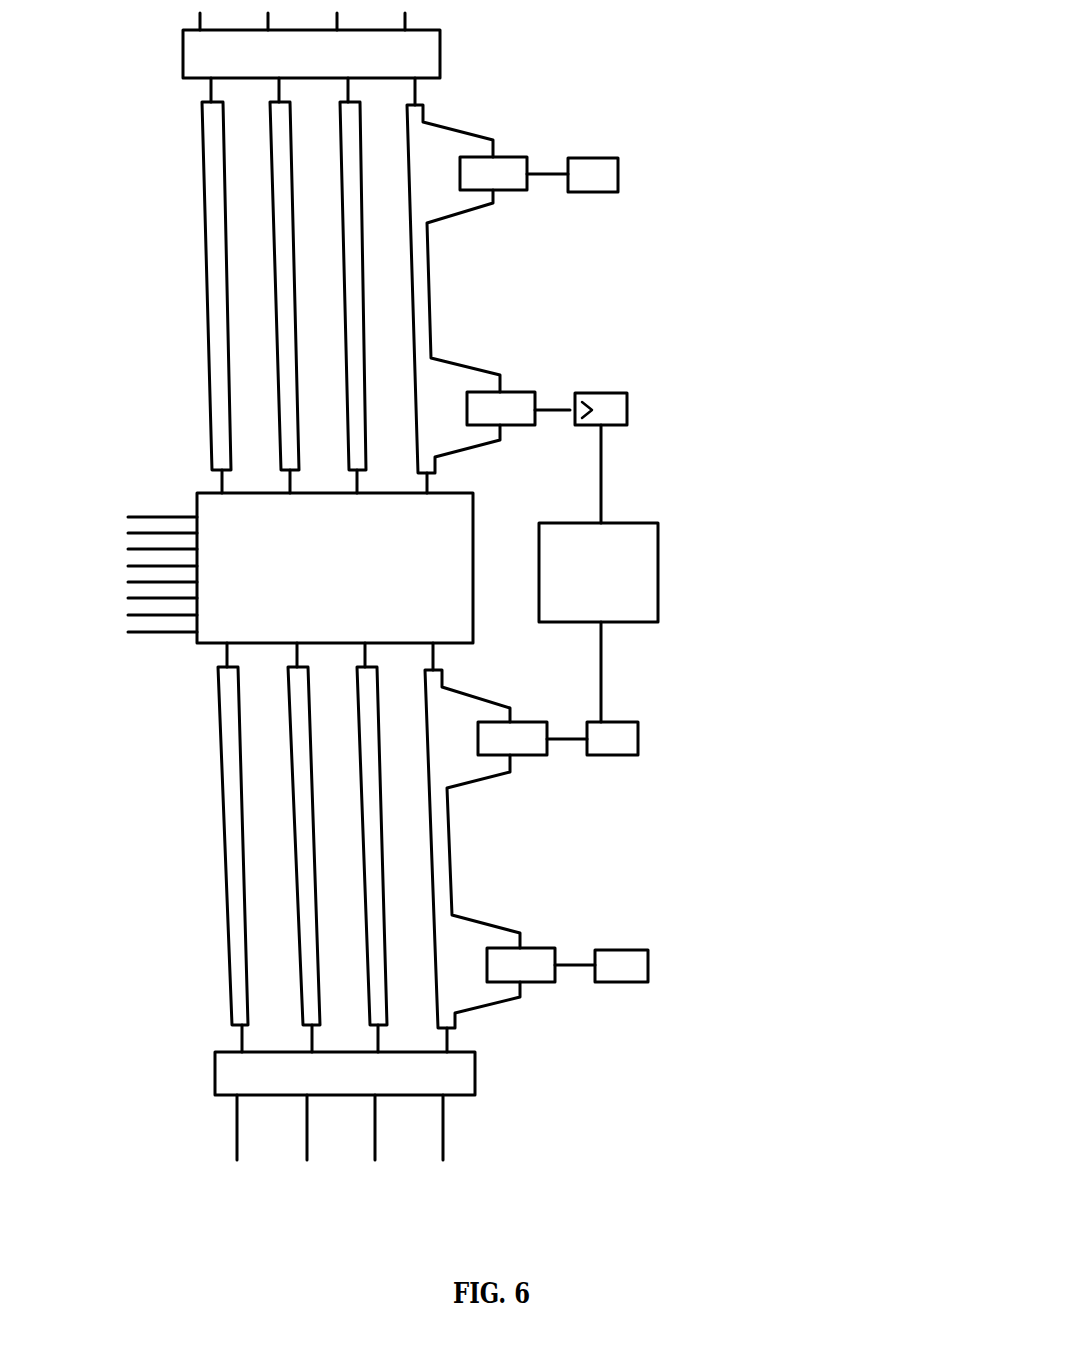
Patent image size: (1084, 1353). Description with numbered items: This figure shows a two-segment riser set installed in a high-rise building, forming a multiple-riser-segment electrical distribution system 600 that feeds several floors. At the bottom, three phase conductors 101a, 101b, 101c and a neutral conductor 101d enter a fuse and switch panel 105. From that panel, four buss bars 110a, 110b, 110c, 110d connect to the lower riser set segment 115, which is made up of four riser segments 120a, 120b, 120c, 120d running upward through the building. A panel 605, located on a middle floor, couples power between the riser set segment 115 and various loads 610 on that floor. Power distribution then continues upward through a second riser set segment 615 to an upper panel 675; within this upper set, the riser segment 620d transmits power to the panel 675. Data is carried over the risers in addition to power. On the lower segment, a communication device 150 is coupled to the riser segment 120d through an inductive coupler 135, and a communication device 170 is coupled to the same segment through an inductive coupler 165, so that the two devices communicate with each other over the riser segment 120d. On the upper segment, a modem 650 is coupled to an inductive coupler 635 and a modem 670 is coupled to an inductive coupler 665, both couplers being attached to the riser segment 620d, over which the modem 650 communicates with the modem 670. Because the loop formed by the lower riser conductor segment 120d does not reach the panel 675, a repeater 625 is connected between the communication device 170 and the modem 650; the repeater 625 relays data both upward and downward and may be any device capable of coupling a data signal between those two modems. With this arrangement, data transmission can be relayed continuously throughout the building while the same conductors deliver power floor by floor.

The high-rise electrical distribution system 600 is at (912, 178).
The panel 675 is at (458, 67).
The riser set segment 615 is at (467, 297).
The riser segment 620d is at (424, 322).
The inductive coupler 665 is at (530, 199).
The modem 670 is at (650, 205).
The inductive coupler 635 is at (537, 383).
The modem 650 is at (673, 428).
The repeater 625 is at (668, 601).
The panel 605 is at (492, 630).
The loads 610 is at (172, 648).
The riser set segment 115 is at (451, 839).
The riser segment 120a is at (233, 877).
The riser segment 120b is at (301, 863).
The riser segment 120c is at (368, 860).
The riser segment 120d is at (449, 872).
The inductive coupler 165 is at (541, 769).
The communication device 170 is at (654, 742).
The inductive coupler 135 is at (552, 991).
The communication device 150 is at (666, 976).
The buss bar 110a is at (230, 1037).
The buss bar 110b is at (306, 1037).
The buss bar 110c is at (374, 1037).
The buss bar 110d is at (455, 1040).
The fuse and switch panel 105 is at (486, 1082).
The phase conductor 101a is at (226, 1137).
The phase conductor 101b is at (296, 1140).
The phase conductor 101c is at (387, 1142).
The neutral conductor 101d is at (458, 1149).